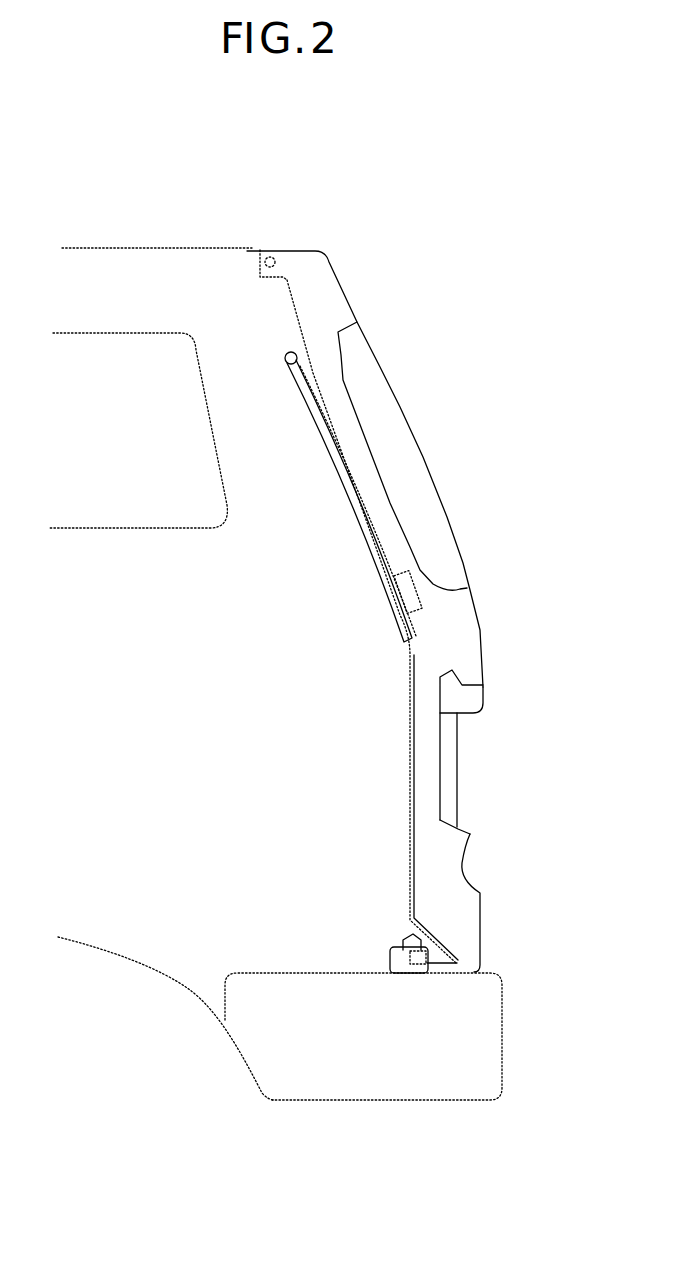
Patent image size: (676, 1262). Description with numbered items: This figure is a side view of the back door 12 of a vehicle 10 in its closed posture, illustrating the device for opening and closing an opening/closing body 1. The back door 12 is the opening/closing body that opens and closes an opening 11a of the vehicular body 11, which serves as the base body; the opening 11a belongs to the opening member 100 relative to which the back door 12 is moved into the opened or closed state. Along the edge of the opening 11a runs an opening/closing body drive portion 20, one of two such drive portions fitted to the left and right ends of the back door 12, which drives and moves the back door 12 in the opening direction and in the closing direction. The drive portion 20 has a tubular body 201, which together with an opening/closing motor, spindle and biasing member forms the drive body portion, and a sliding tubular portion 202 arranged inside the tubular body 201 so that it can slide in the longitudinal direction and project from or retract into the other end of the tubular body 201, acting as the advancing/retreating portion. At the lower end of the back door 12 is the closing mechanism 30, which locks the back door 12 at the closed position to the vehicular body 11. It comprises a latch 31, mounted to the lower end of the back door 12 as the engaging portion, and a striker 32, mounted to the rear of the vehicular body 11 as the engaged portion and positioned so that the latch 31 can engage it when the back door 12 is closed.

The device for opening and closing an opening/closing body 1 is at (187, 613).
The vehicle 10 is at (128, 233).
The vehicular body 11 is at (188, 247).
The opening 11a is at (416, 753).
The back door 12 is at (481, 630).
The opening member 100 is at (303, 223).
The opening/closing body drive portion 20 is at (332, 497).
The tubular body 201 is at (322, 440).
The sliding tubular portion 202 is at (348, 489).
The closing mechanism 30 is at (458, 943).
The latch 31 is at (405, 940).
The striker 32 is at (390, 958).